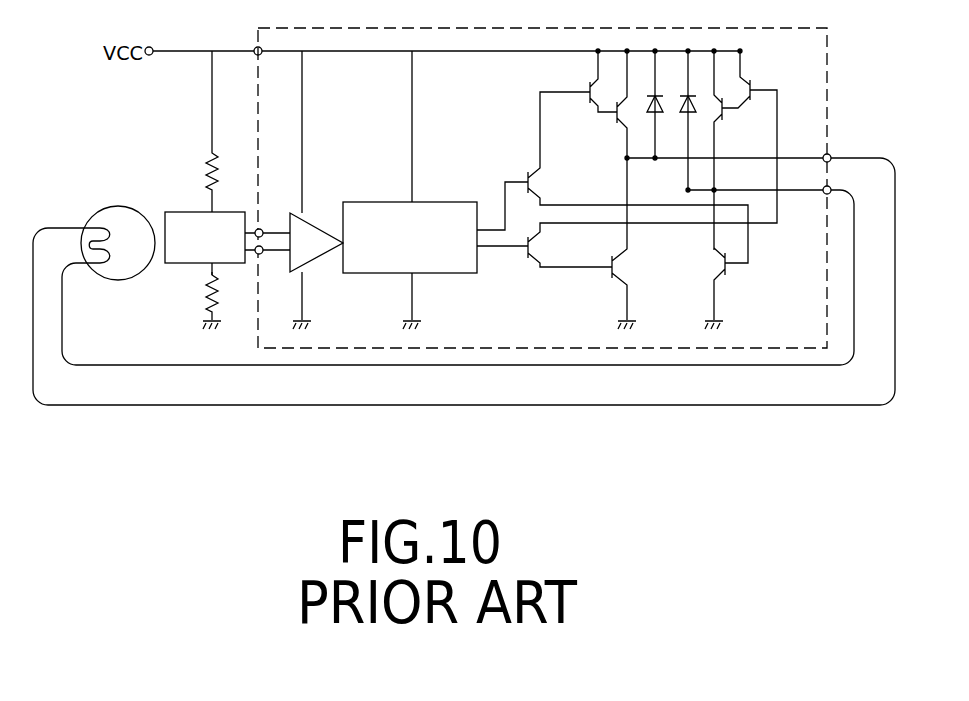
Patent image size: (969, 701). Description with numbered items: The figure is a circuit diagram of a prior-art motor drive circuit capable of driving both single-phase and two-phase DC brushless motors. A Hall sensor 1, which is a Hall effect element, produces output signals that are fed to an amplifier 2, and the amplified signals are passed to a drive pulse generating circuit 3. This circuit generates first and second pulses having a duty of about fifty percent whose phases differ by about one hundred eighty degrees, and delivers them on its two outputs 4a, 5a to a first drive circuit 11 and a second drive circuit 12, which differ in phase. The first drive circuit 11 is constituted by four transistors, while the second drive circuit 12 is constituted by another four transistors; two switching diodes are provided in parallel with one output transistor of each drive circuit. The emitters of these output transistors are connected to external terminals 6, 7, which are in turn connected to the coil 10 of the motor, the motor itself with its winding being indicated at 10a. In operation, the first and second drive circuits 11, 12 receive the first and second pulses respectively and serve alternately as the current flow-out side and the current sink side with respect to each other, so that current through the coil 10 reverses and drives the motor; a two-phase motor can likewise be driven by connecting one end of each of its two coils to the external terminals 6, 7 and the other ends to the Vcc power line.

The Hall sensor 1 is at (230, 263).
The amplifier 2 is at (318, 256).
The drive pulse generating circuit 3 is at (452, 273).
The first output of drive pulse generating circuit 4a is at (487, 227).
The second output of drive pulse generating circuit 5a is at (495, 248).
The external terminal 6 is at (831, 153).
The external terminal 7 is at (823, 193).
The coil 10 is at (116, 281).
The motor coil 10a is at (112, 242).
The first drive circuit 11 is at (602, 200).
The second drive circuit 12 is at (758, 187).